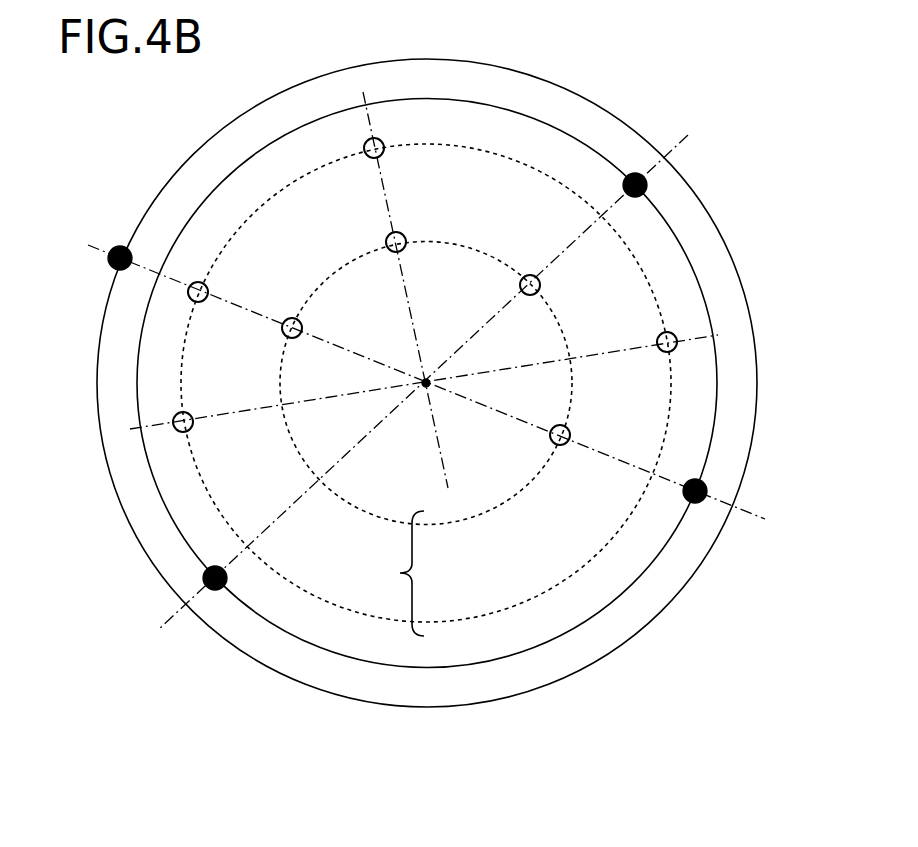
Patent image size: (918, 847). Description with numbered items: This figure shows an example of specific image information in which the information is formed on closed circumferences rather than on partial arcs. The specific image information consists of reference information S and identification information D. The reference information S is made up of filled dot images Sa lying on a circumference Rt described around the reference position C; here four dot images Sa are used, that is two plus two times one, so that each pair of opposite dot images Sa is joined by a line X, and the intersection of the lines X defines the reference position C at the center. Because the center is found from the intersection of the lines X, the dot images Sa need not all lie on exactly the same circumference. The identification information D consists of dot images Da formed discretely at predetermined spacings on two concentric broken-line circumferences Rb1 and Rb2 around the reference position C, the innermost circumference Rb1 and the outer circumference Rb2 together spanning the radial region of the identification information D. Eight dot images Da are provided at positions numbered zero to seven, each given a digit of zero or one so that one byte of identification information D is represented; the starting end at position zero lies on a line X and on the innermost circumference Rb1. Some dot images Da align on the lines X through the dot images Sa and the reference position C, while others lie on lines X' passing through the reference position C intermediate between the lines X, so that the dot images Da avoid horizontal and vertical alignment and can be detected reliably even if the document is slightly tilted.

The circumference Rt is at (565, 134).
The reference information S is at (641, 160).
The dot image Sa is at (117, 248).
The dot image Da is at (290, 318).
The reference position C is at (431, 366).
The circumference Rb1 is at (438, 526).
The circumference Rb2 is at (535, 597).
The identification information D is at (398, 573).
The line X is at (426, 385).
The line X' is at (427, 293).